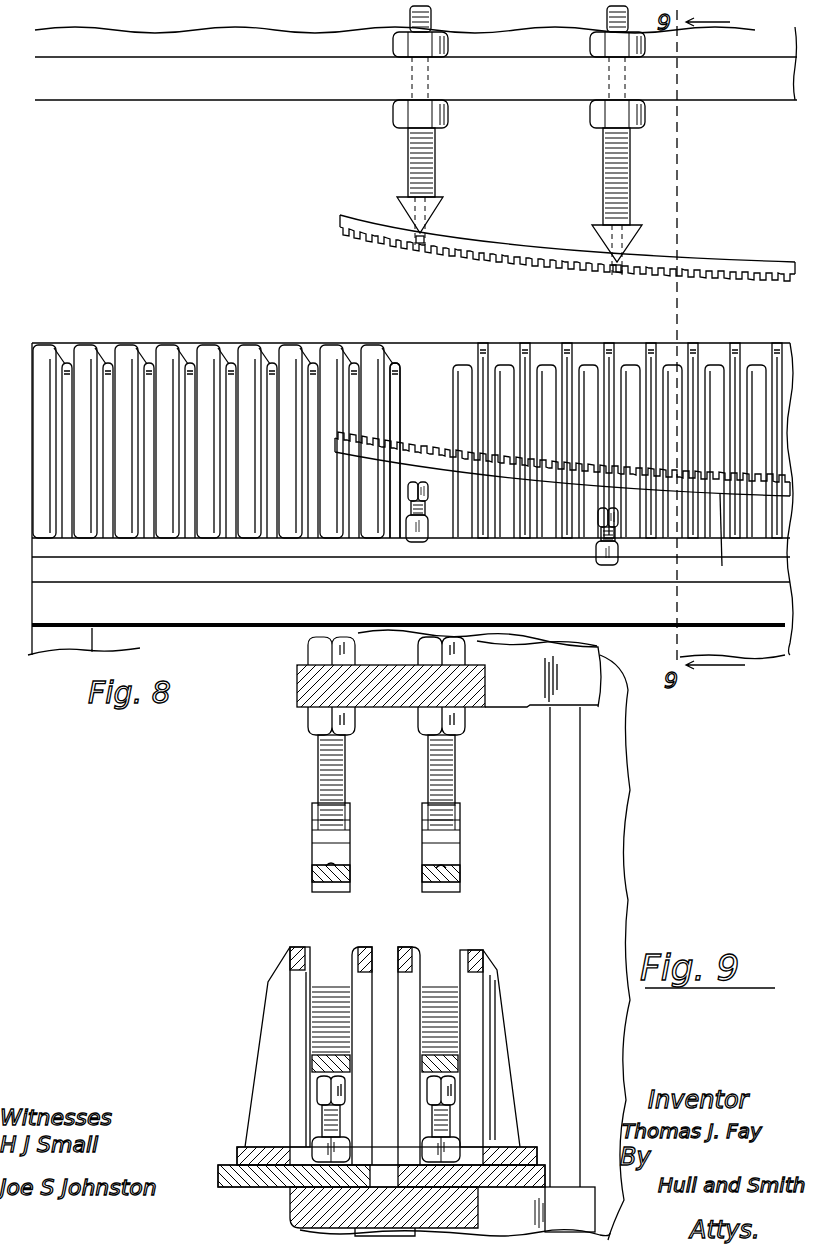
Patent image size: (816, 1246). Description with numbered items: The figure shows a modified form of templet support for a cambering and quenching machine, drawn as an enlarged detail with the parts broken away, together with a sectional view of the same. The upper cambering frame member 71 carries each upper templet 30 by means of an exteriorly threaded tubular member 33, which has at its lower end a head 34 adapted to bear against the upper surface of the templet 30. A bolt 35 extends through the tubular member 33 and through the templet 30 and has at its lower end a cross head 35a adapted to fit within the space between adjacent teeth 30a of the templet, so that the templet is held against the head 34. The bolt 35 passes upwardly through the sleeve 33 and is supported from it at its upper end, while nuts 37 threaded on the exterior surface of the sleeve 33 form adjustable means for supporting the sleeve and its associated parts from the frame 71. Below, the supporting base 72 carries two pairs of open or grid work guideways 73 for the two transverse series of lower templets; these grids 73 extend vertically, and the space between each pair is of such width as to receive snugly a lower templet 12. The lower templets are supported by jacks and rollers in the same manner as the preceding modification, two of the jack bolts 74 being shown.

In FIG. 8, the lower templet 12 is at (720, 544).
In FIG. 9, the lower templet 12 is at (312, 1050).
In FIG. 9, the upper templet 30 is at (312, 870).
In FIG. 8, the teeth of the templet 30a is at (505, 266).
In FIG. 8, the exteriorly threaded tubular member 33 is at (436, 163).
In FIG. 9, the exteriorly threaded tubular member 33 is at (318, 778).
In FIG. 8, the head 34 is at (642, 238).
In FIG. 8, the bolt 35 is at (432, 16).
In FIG. 9, the bolt 35 is at (436, 866).
In FIG. 8, the cross head 35a is at (421, 245).
In FIG. 8, the nuts 37 is at (393, 108).
In FIG. 8, the upper cambering frame member 71 is at (516, 88).
In FIG. 9, the upper cambering frame member 71 is at (390, 710).
In FIG. 8, the supporting base 72 is at (409, 598).
In FIG. 9, the supporting base 72 is at (290, 1212).
In FIG. 8, the grids or guideways 73 is at (291, 352).
In FIG. 9, the grids or guideways 73 is at (293, 1025).
In FIG. 8, the jack bolts 74 is at (412, 513).
In FIG. 9, the jack bolts 74 is at (318, 1123).